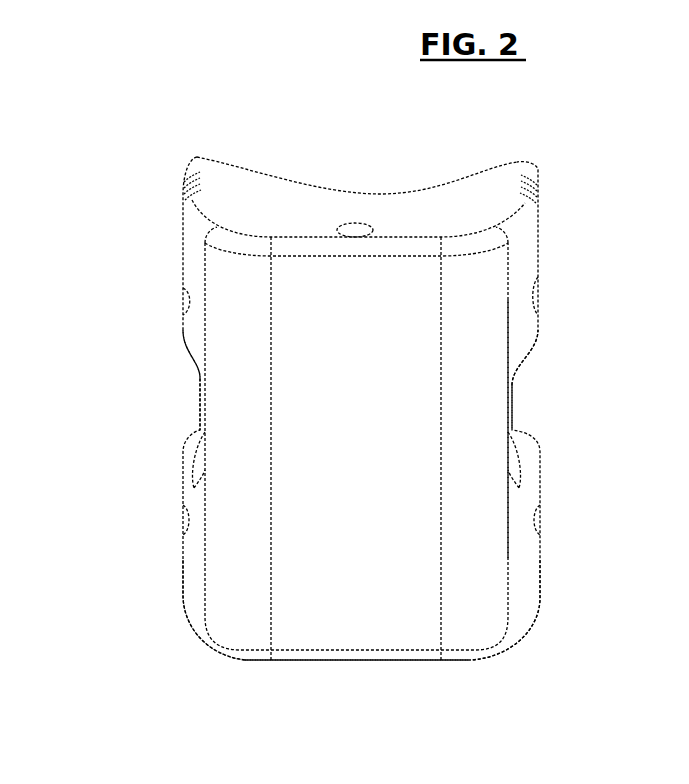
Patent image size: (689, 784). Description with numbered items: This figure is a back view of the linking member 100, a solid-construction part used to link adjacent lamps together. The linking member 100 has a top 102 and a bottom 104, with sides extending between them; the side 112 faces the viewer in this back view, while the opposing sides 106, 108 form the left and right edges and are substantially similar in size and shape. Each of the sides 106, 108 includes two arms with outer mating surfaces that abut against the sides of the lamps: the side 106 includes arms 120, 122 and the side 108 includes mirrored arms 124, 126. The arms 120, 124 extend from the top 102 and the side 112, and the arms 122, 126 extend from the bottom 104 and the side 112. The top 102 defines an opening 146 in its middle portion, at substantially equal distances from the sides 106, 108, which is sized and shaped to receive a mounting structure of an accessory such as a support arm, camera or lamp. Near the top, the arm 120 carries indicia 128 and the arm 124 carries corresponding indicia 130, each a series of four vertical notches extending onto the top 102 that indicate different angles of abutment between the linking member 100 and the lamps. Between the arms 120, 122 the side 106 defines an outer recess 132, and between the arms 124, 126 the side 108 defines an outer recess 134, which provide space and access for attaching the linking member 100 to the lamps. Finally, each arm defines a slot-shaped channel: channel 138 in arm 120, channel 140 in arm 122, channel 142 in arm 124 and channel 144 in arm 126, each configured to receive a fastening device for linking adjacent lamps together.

The linking member 100 is at (187, 110).
The top 102 is at (386, 218).
The bottom 104 is at (354, 680).
The side 106 is at (563, 388).
The side 108 is at (157, 384).
The side 112 is at (330, 436).
The arm 120 is at (527, 258).
The arm 122 is at (533, 555).
The arm 124 is at (192, 245).
The arm 126 is at (196, 568).
The indicia 128 is at (544, 191).
The indicia 130 is at (178, 180).
The outer recess 132 is at (518, 394).
The outer recess 134 is at (201, 402).
The channel 138 is at (533, 293).
The channel 140 is at (538, 507).
The channel 142 is at (185, 296).
The channel 144 is at (187, 512).
The opening 146 is at (355, 226).